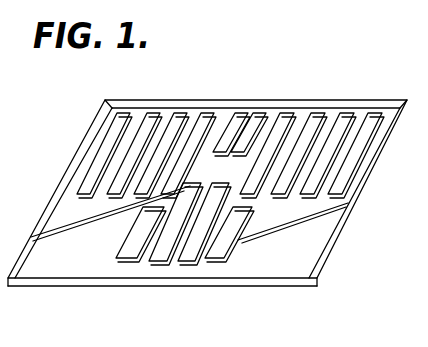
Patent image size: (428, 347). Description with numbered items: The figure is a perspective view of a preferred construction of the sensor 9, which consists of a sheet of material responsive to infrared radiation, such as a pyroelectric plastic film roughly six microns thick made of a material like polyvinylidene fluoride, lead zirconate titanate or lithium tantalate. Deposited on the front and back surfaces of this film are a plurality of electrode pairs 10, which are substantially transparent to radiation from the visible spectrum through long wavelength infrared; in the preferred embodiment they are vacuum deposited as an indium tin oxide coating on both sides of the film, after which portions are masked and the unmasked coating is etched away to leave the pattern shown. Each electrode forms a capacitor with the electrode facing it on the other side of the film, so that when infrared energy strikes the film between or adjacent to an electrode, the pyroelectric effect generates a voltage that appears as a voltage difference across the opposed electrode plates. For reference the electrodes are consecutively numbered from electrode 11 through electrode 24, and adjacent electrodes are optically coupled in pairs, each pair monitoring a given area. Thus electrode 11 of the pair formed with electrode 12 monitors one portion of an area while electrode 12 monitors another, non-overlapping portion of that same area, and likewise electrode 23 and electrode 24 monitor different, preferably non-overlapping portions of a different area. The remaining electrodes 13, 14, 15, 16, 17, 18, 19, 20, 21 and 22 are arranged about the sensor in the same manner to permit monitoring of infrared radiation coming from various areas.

The sensor 9 is at (371, 102).
The electrode pairs 10 is at (200, 103).
The electrode 11 is at (118, 116).
The electrode 12 is at (152, 114).
The electrode 13 is at (180, 114).
The electrode 14 is at (213, 112).
The electrode 15 is at (153, 257).
The electrode 16 is at (190, 256).
The electrode 17 is at (314, 113).
The electrode 18 is at (344, 114).
The electrode 19 is at (360, 112).
The electrode 20 is at (356, 135).
The electrode 21 is at (238, 113).
The electrode 22 is at (253, 114).
The electrode 23 is at (128, 241).
The electrode 24 is at (221, 248).